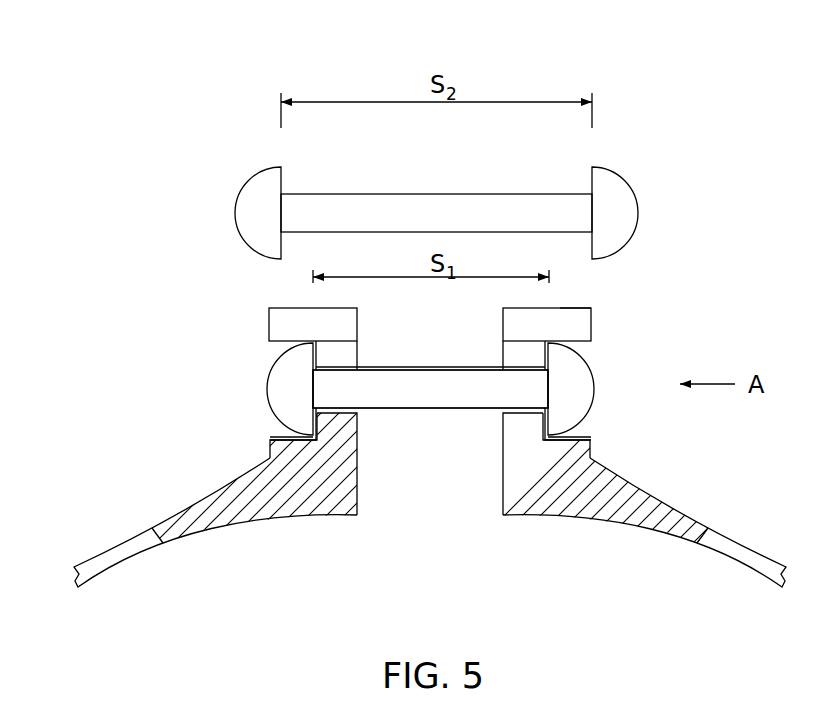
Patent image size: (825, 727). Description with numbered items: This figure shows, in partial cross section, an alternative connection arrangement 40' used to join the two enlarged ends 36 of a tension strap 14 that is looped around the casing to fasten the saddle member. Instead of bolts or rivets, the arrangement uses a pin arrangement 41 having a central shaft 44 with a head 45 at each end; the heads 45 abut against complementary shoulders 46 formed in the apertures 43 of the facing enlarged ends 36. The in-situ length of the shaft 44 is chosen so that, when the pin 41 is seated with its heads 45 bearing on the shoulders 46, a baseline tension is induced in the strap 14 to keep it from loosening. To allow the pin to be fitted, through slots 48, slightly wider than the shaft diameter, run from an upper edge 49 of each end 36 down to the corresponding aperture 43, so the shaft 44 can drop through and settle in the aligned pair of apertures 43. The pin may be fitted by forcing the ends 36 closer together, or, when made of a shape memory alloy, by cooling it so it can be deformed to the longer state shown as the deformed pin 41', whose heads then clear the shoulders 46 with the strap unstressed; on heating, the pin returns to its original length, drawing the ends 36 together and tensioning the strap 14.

The tension strap 14 is at (732, 566).
The enlarged end 36 is at (317, 495).
The alternative connection arrangement 40' is at (539, 101).
The deformed pin 41' is at (509, 225).
The pin arrangement 41 is at (528, 339).
The aperture 43 is at (503, 368).
The central shaft 44 is at (445, 388).
The head 45 is at (285, 387).
The shoulder 46 is at (270, 437).
The through slot 48 is at (285, 327).
The upper edge 49 is at (583, 308).